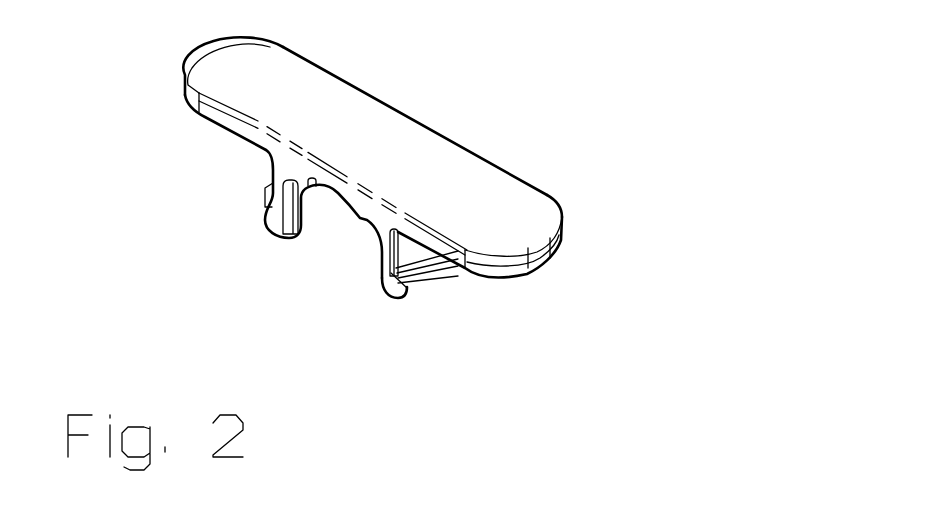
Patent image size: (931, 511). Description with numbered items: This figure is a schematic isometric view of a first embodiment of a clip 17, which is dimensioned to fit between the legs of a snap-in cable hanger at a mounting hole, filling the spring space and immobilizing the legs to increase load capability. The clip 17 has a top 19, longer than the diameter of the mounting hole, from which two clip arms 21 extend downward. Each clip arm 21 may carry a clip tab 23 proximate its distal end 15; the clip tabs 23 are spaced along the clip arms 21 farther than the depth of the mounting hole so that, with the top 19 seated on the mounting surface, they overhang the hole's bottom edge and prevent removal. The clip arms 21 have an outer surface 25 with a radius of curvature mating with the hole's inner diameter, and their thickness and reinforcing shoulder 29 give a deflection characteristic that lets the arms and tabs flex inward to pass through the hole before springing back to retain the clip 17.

The distal end 15 is at (366, 260).
The clip 17 is at (429, 149).
The top 19 is at (490, 217).
The clip arm 21 is at (280, 227).
The clip tab 23 is at (270, 189).
The outer surface 25 is at (383, 283).
The reinforcing shoulder 29 is at (377, 227).